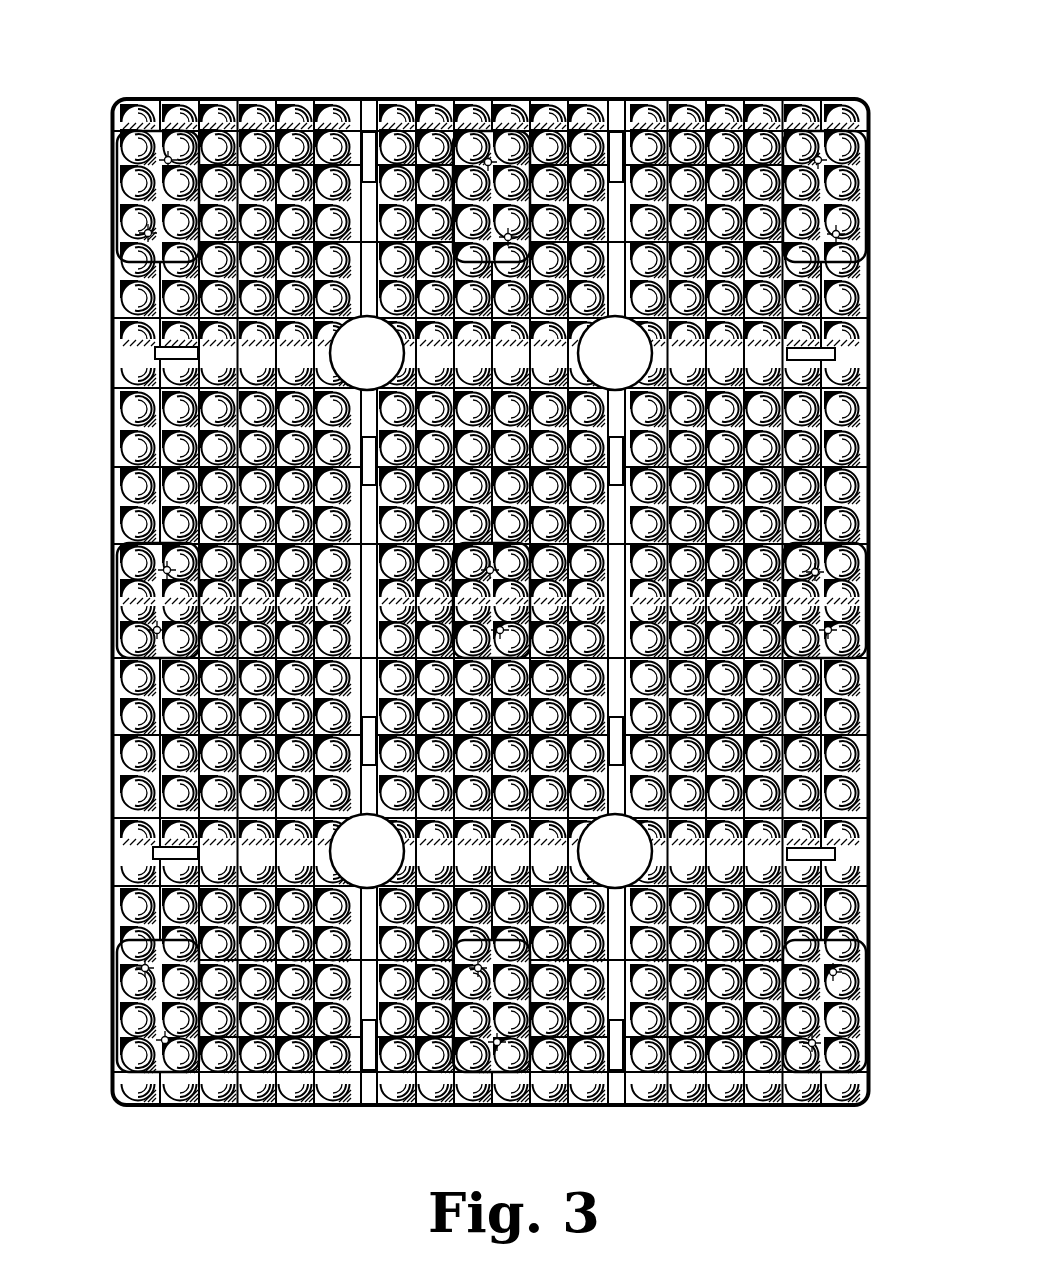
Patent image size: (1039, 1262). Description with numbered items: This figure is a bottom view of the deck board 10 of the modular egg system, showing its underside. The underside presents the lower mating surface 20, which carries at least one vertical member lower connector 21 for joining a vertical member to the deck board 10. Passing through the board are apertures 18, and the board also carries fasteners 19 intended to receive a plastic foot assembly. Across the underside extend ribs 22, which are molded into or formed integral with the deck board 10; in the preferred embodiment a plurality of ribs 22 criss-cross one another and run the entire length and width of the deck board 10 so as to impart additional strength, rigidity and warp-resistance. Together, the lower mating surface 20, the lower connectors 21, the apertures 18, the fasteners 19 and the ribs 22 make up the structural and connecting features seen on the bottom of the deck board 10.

The deck board 10 is at (746, 50).
The aperture 18 is at (616, 348).
The fastener 19 is at (500, 150).
The lower mating surface 20 is at (378, 125).
The vertical member lower connector 21 is at (628, 481).
The rib 22 is at (370, 538).